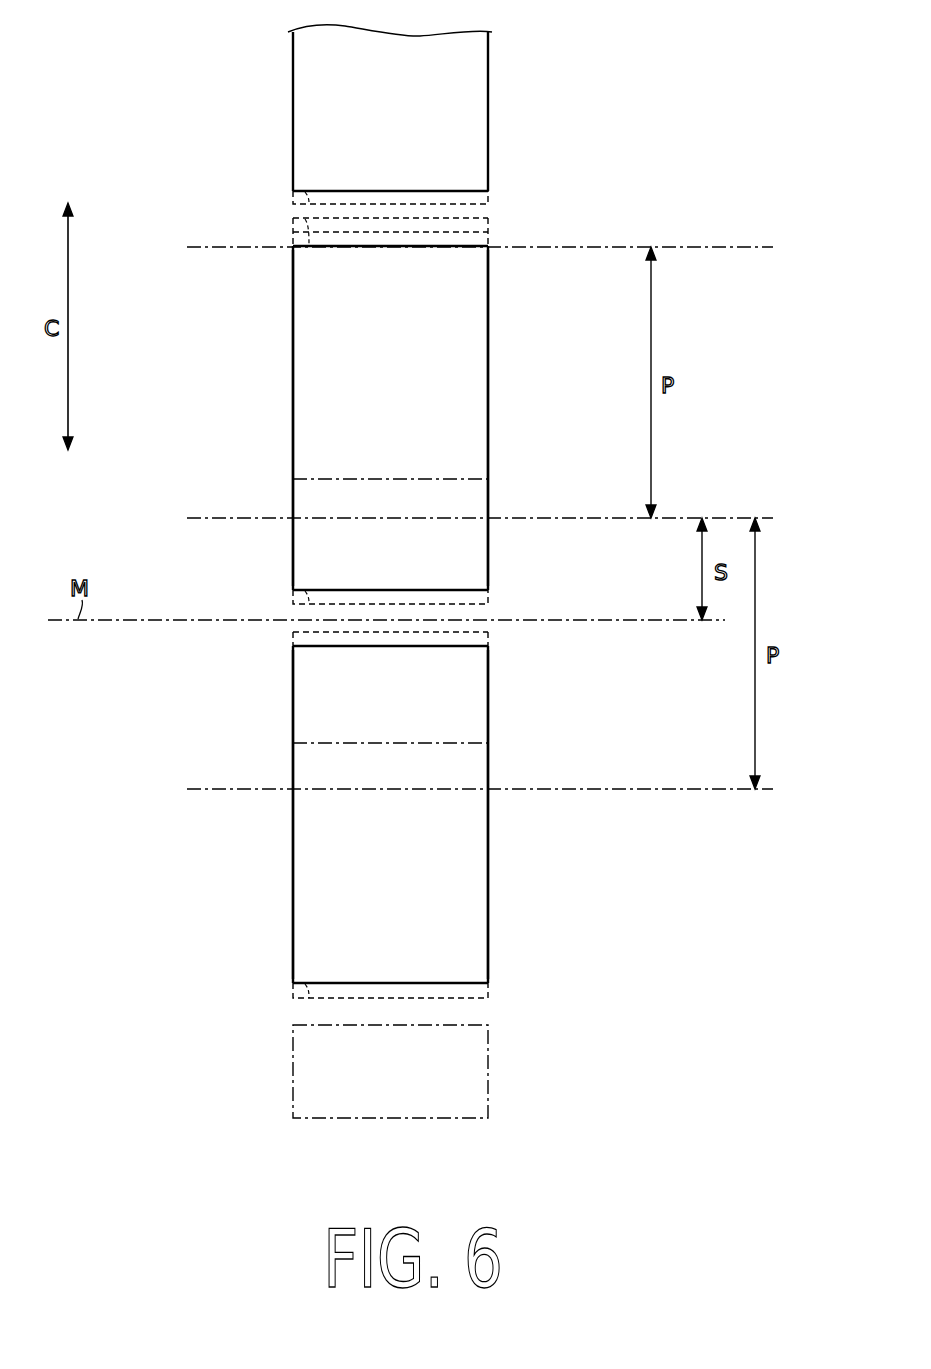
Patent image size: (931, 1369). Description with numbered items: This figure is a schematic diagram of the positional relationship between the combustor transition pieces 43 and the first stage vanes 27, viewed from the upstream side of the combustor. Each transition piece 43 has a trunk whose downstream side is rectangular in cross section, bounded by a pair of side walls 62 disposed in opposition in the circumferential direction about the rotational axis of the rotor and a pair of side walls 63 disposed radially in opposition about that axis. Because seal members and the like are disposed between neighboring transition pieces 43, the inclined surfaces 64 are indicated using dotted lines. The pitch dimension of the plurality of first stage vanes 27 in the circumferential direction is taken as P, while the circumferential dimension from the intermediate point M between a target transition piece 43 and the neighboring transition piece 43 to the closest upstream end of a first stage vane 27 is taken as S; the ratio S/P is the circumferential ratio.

The transition piece 43 is at (290, 91).
The side walls 62 is at (360, 247).
The side walls 63 is at (293, 413).
The inclined surfaces 64 is at (293, 218).
The first stage vanes 27 is at (454, 210).